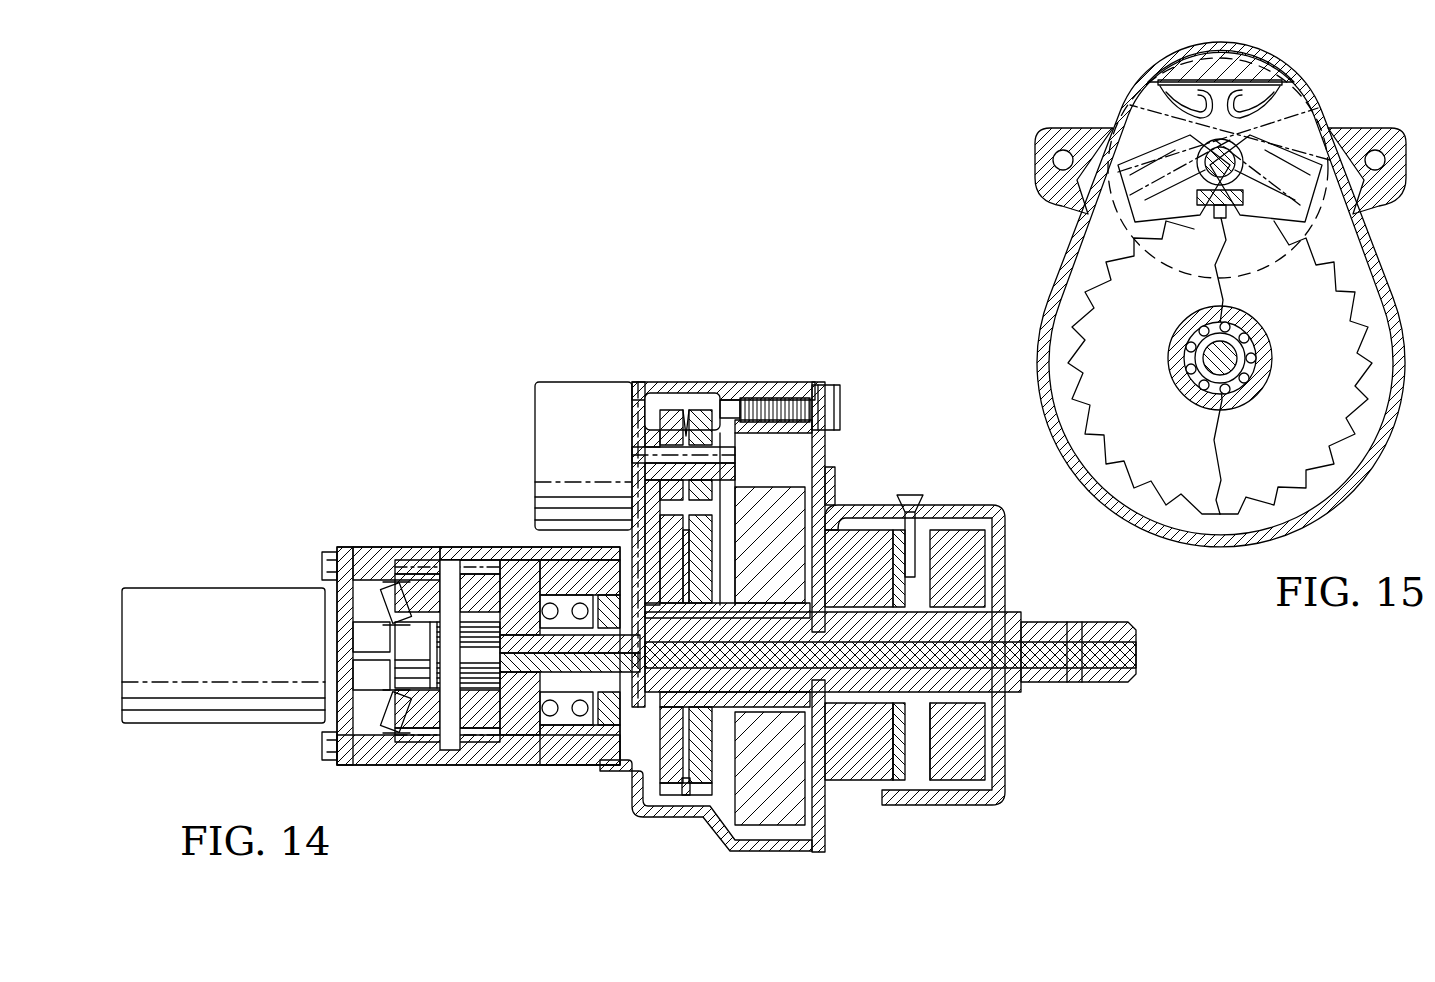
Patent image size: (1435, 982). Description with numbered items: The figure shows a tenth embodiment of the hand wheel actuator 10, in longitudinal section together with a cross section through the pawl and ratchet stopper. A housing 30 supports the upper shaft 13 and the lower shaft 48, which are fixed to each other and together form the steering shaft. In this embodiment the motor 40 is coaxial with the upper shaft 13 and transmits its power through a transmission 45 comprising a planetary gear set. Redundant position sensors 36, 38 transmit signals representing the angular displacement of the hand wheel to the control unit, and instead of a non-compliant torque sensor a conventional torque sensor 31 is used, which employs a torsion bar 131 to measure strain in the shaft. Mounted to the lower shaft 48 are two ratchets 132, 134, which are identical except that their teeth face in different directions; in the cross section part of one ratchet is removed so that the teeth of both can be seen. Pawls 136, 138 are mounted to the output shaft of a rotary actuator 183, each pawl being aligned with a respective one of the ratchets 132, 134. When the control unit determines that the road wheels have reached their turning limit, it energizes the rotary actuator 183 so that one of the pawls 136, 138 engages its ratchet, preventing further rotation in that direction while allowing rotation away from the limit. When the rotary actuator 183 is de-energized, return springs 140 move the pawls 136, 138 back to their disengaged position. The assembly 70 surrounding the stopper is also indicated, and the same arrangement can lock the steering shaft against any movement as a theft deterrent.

In FIG. 14, the hand wheel actuator 10 is at (332, 410).
In FIG. 14, the upper shaft 13 is at (1112, 612).
In FIG. 14, the housing 30 is at (1085, 680).
In FIG. 14, the torque sensor 31 is at (775, 805).
In FIG. 14, the position sensor 36 is at (975, 760).
In FIG. 14, the position sensor 38 is at (855, 765).
In FIG. 14, the motor 40 is at (235, 600).
In FIG. 14, the transmission 45 is at (486, 764).
In FIG. 14, the lower shaft 48 is at (663, 608).
In FIG. 14, the brake assembly 70 is at (852, 456).
In FIG. 14, the torsion bar 131 is at (1040, 655).
In FIG. 14, the ratchet 132 is at (668, 750).
In FIG. 15, the ratchet 132 is at (1125, 392).
In FIG. 14, the ratchet 134 is at (690, 785).
In FIG. 15, the ratchet 134 is at (1290, 452).
In FIG. 14, the pawl 136 is at (672, 413).
In FIG. 15, the pawl 136 is at (1292, 140).
In FIG. 14, the pawl 138 is at (700, 413).
In FIG. 15, the pawl 138 is at (1137, 160).
In FIG. 15, the return springs 140 is at (1255, 65).
In FIG. 14, the rotary actuator 183 is at (565, 397).
In FIG. 15, the rotary actuator 183 is at (1045, 275).